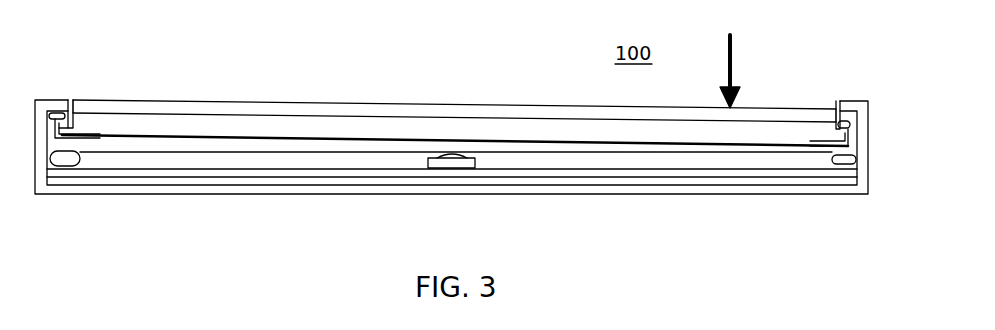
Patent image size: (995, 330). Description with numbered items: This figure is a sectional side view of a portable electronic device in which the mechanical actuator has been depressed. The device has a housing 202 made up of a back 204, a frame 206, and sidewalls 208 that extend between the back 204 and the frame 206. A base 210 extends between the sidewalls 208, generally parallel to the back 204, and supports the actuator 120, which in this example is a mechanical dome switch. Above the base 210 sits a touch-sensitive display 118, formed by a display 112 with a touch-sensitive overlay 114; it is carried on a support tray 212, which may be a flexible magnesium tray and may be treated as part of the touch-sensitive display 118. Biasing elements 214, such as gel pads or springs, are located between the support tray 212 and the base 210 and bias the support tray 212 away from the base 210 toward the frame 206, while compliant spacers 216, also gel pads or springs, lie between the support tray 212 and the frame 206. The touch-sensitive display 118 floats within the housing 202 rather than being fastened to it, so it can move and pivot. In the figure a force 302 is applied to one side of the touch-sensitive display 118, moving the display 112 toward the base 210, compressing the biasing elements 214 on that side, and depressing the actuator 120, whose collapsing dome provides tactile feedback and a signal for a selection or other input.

The display 112 is at (402, 115).
The touch-sensitive overlay 114 is at (505, 105).
The touch-sensitive display 118 is at (323, 103).
The actuator 120 is at (443, 168).
The housing 202 is at (636, 194).
The back 204 is at (557, 186).
The frame 206 is at (48, 100).
The sidewalls 208 is at (861, 178).
The base 210 is at (308, 169).
The support tray 212 is at (240, 143).
The biasing elements 214 is at (830, 163).
The compliant spacers 216 is at (840, 121).
The force 302 is at (732, 70).